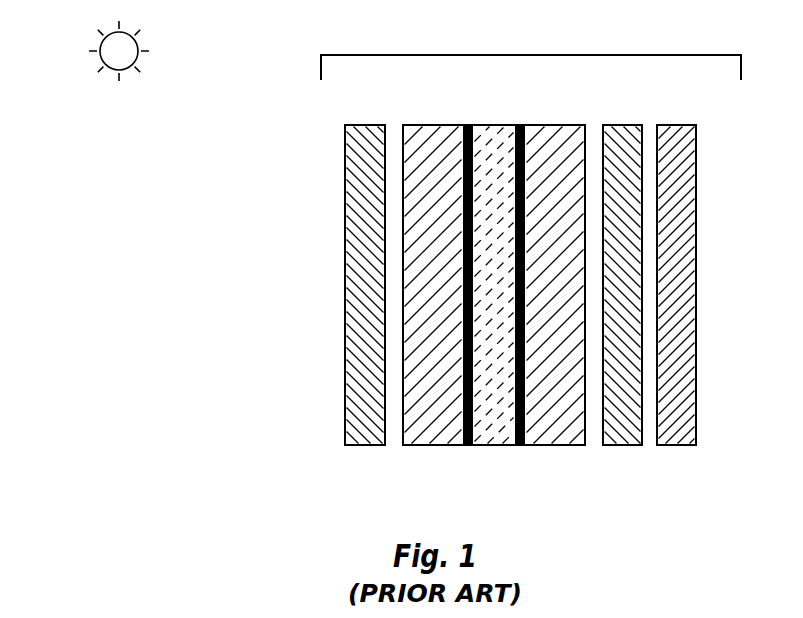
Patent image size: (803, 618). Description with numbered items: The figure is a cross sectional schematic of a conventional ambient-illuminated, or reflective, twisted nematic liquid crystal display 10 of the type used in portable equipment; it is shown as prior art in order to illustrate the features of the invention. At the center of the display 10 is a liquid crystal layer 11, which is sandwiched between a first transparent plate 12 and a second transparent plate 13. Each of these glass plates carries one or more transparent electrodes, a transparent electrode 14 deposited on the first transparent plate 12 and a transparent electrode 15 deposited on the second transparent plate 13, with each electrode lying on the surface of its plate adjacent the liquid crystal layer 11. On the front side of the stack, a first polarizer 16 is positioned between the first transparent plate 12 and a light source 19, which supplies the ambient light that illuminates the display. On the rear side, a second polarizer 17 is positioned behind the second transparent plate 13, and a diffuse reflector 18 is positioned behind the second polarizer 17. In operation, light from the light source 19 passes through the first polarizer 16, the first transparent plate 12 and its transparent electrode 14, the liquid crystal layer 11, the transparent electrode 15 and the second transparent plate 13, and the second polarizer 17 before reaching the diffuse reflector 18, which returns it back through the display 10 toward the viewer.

The reflective twisted nematic liquid crystal display 10 is at (535, 55).
The liquid crystal layer 11 is at (503, 124).
The first transparent plate 12 is at (437, 124).
The second transparent plate 13 is at (560, 124).
The transparent electrode 14 is at (468, 447).
The transparent electrode 15 is at (520, 447).
The first polarizer 16 is at (365, 446).
The second polarizer 17 is at (620, 447).
The diffuse reflector 18 is at (682, 124).
The light source 19 is at (110, 70).